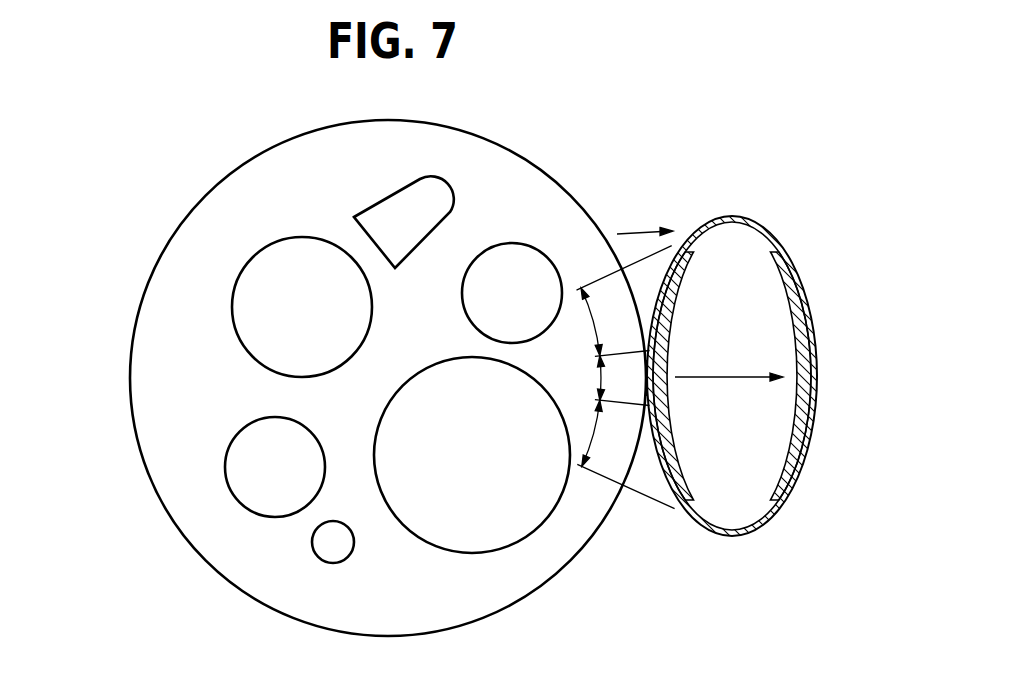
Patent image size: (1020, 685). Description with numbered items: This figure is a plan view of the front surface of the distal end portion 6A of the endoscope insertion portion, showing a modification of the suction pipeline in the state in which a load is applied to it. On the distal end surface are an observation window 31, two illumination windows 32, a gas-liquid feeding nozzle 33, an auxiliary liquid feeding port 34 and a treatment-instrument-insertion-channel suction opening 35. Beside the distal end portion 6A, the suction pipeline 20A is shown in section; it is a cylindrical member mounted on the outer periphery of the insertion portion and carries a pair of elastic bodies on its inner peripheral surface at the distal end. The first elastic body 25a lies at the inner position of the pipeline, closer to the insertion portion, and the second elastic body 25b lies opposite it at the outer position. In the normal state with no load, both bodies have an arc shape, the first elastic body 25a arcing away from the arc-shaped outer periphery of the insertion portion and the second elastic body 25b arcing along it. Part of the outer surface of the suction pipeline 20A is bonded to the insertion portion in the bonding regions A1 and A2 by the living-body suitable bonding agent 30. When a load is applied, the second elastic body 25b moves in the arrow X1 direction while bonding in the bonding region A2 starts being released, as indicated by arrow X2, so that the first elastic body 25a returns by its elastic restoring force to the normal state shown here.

The distal end portion 6A is at (114, 125).
The observation window 31 is at (260, 291).
The illumination windows 32 is at (498, 265).
The gas-liquid feeding nozzle 33 is at (383, 222).
The auxiliary liquid feeding port 34 is at (322, 543).
The treatment-instrument-insertion-channel suction opening 35 is at (495, 532).
The suction pipeline 20A is at (733, 215).
The first elastic body 25a is at (690, 505).
The second elastic body 25b is at (780, 497).
The living-body suitable bonding agent 30 is at (648, 424).
The bonding region A1 is at (622, 378).
The bonding region A2 is at (626, 377).
The arrow direction X1 is at (722, 376).
The arrow direction X2 is at (640, 231).